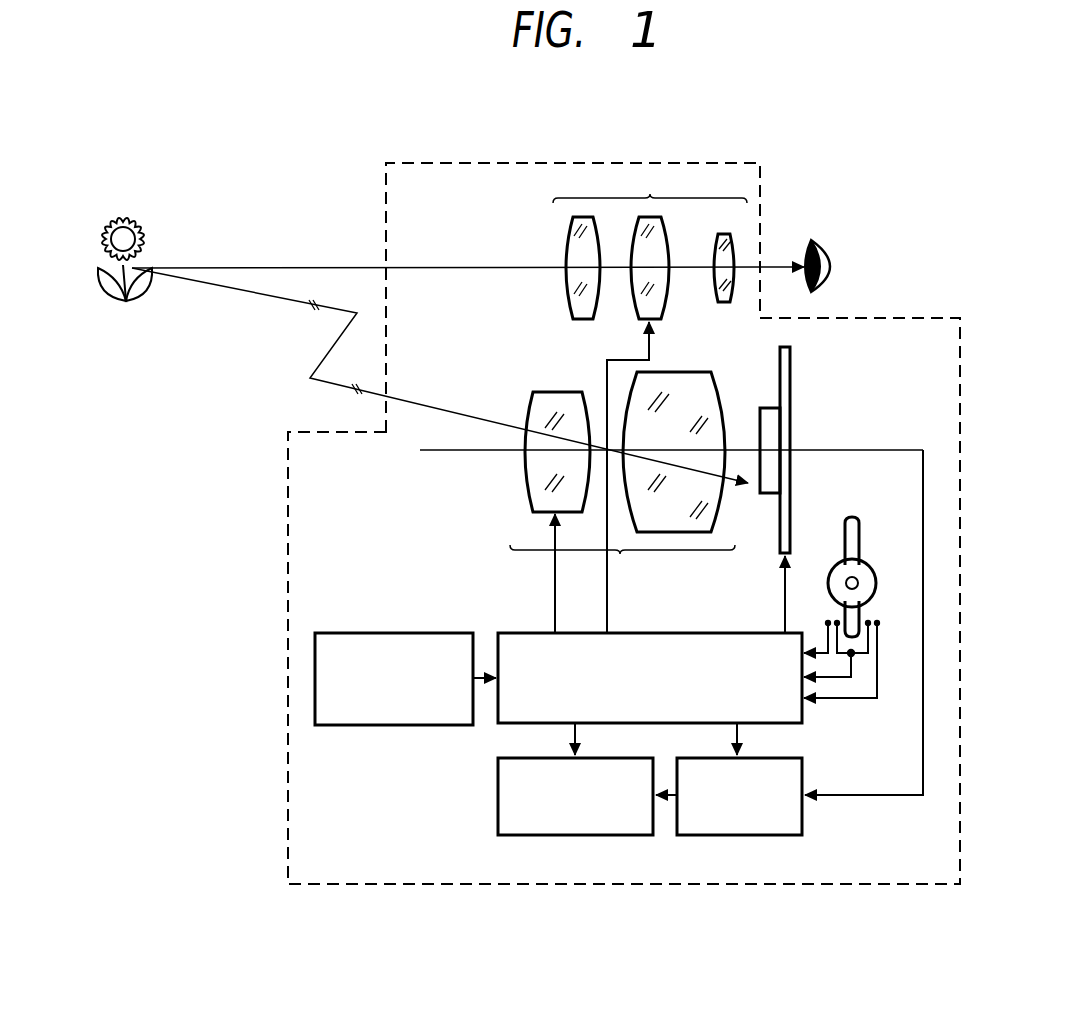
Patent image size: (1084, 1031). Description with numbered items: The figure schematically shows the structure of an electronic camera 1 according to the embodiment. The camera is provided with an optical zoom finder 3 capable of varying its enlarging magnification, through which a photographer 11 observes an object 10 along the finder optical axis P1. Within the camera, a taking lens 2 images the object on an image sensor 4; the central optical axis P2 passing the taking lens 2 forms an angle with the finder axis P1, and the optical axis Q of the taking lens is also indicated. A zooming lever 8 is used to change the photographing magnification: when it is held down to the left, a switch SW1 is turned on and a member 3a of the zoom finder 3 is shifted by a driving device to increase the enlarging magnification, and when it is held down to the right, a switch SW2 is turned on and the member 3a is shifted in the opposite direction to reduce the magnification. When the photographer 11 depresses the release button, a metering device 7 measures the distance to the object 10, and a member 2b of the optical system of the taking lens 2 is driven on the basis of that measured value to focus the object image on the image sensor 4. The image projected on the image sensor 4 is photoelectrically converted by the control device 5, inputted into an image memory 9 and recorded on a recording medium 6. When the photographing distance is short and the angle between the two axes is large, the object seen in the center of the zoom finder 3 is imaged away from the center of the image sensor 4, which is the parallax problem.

The electronic camera 1 is at (446, 157).
The taking lens 2 is at (600, 478).
The member of the optical system of the taking lens 2b is at (530, 497).
The zoom finder 3 is at (650, 245).
The member of the zoom finder 3a is at (660, 222).
The image sensor 4 is at (790, 371).
The control device 5 is at (525, 632).
The recording medium 6 is at (610, 835).
The metering device 7 is at (346, 632).
The zooming lever 8 is at (853, 515).
The image memory 9 is at (770, 835).
The object 10 is at (122, 314).
The photographer 11 is at (838, 242).
The switch SW1 is at (871, 611).
The switch SW2 is at (831, 614).
The optical axis of the zoom finder P1 is at (271, 265).
The central optical axis passing the taking lens P2 is at (258, 296).
The optical axis of the zoom lens Q is at (445, 453).